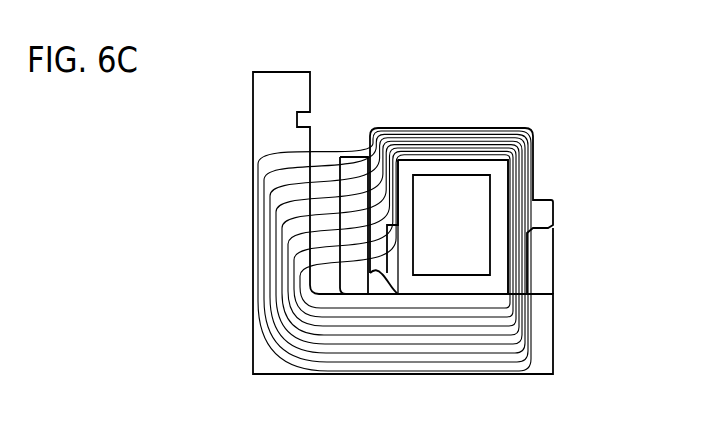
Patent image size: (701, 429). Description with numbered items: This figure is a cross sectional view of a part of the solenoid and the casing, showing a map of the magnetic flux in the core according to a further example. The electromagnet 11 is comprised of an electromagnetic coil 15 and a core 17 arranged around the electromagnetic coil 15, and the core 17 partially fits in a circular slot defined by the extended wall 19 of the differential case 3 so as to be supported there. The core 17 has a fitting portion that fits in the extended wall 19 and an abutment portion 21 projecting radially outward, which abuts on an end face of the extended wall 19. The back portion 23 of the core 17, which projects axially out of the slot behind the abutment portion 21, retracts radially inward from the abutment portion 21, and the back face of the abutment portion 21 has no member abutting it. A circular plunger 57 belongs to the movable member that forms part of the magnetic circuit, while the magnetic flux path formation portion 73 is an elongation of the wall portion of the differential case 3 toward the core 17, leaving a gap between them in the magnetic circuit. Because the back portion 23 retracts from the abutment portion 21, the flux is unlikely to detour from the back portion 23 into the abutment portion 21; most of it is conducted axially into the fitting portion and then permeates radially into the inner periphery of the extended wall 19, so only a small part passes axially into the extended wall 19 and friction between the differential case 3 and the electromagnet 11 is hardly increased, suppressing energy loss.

The differential case 3 is at (241, 175).
The electromagnet 11 is at (411, 121).
The electromagnetic coil 15 is at (452, 191).
The core 17 is at (488, 140).
The extended wall 19 is at (556, 268).
The abutment portion 21 is at (552, 211).
The back portion 23 is at (537, 171).
The circular plunger 57 is at (348, 172).
The magnetic flux path formation portion 73 is at (403, 281).